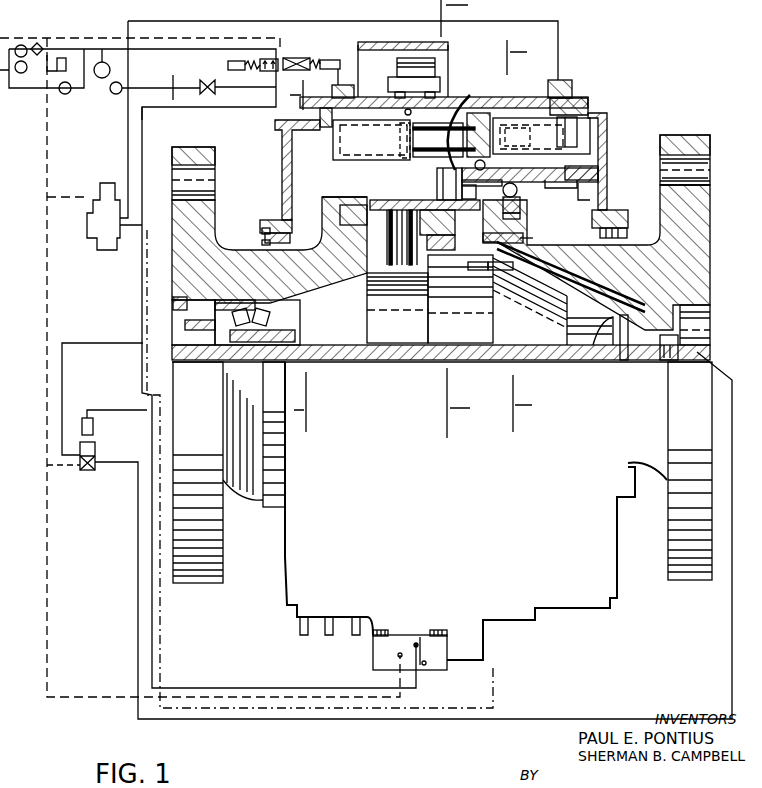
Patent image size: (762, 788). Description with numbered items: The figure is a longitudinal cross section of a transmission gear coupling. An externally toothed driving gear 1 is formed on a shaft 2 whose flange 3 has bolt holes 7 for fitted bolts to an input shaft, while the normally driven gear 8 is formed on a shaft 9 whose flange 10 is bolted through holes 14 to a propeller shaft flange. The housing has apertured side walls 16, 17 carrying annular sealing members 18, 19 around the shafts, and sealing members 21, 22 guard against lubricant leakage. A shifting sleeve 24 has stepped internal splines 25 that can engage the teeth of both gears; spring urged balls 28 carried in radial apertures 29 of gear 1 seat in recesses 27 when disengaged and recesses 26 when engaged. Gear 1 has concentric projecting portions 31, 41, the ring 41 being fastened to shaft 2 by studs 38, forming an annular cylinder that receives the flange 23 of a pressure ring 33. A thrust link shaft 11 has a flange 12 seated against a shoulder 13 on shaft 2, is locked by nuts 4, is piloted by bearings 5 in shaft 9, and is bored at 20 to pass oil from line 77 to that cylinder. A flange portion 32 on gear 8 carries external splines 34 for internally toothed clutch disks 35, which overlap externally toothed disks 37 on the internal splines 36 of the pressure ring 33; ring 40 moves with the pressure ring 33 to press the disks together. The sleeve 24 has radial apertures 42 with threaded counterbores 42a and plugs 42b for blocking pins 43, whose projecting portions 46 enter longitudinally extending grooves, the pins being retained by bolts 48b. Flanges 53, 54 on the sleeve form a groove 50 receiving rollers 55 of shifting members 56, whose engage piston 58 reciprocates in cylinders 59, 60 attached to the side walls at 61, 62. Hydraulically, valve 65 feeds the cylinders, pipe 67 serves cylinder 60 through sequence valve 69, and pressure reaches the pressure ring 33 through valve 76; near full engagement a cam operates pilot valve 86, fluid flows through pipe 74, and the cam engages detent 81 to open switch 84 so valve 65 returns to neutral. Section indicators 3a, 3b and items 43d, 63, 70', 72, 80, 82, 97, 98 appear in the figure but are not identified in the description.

The externally toothed gear 1 is at (531, 238).
The shaft 2 is at (711, 228).
The flange 3 is at (690, 135).
The section line 3a is at (466, 219).
The section line 3b is at (289, 256).
The nuts 4 is at (712, 320).
The bearings 5 is at (252, 346).
The bolt holes 7 is at (712, 166).
The gear 8 is at (340, 197).
The shaft 9 is at (262, 243).
The flange 10 is at (175, 233).
The thrust link shaft 11 is at (482, 360).
The flange 12 is at (606, 348).
The shoulder 13 is at (626, 350).
The holes 14 is at (172, 186).
The side wall 16 is at (607, 172).
The side wall 17 is at (282, 170).
The annular sealing member 18 is at (628, 224).
The annular sealing member 19 is at (290, 238).
The bore 20 is at (670, 360).
The sealing member 21 is at (600, 236).
The sealing member 22 is at (262, 231).
The axially extending flange 23 is at (540, 300).
The shifting sleeve 24 is at (585, 166).
The splines 25 is at (548, 187).
The recesses 26 is at (589, 195).
The recesses 27 is at (517, 190).
The spring urged camming balls 28 is at (520, 208).
The apertures 29 is at (520, 218).
The concentric projecting portion 31 is at (492, 236).
The projecting flange portion 32 is at (397, 308).
The pressure ring 33 is at (392, 210).
The splines 34 is at (484, 265).
The clutch disks 35 is at (468, 266).
The splines 36 is at (378, 205).
The clutch disks 37 is at (370, 215).
The studs 38 is at (500, 290).
The annular ring 40 is at (430, 212).
The concentric portion or ring 41 is at (470, 275).
The apertures 42 is at (455, 205).
The threaded counterbores 42a is at (468, 98).
The threaded plugs 42b is at (403, 134).
The blocking pins 43 is at (449, 184).
The val ve 43d is at (62, 57).
The projecting portion 46 is at (472, 182).
The bolts 48b is at (474, 167).
The peripheral groove 50 is at (545, 168).
The flanged portion 53 is at (467, 136).
The flanged portion 54 is at (517, 137).
The rollers 55 is at (505, 180).
The shifting members 56 is at (488, 118).
The engage piston 58 is at (444, 140).
The cylinder 59 is at (373, 140).
The cylinder 60 is at (545, 140).
The attachment point 61 is at (578, 137).
The attachment point 62 is at (328, 127).
The line 63 is at (341, 72).
The valve 65 is at (297, 58).
The pipe 67 is at (560, 52).
The sequence valve 69 is at (106, 250).
The line 70' is at (156, 87).
The pump 72 is at (21, 73).
The pipe 74 is at (66, 94).
The operated valve 76 is at (96, 452).
The line 77 is at (548, 265).
The gauge 80 is at (21, 45).
The detent 81 is at (405, 113).
The motor base 82 is at (414, 87).
The switch 84 is at (415, 61).
The pilot valve 86 is at (447, 668).
The relief valve 97 is at (228, 66).
The spring 98 is at (326, 55).